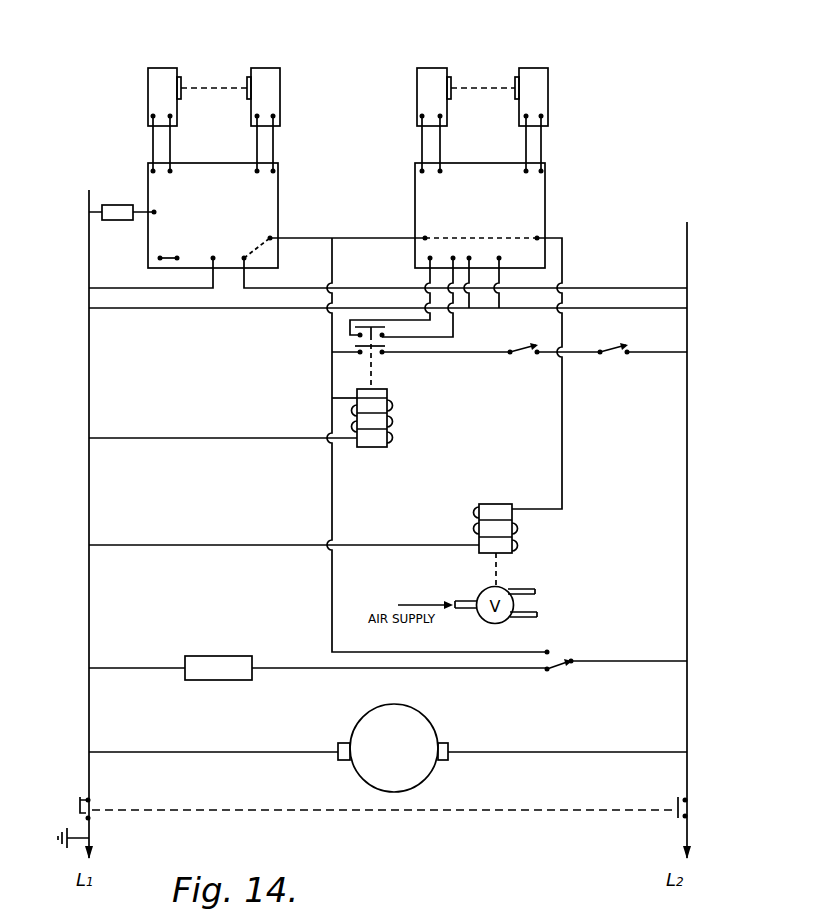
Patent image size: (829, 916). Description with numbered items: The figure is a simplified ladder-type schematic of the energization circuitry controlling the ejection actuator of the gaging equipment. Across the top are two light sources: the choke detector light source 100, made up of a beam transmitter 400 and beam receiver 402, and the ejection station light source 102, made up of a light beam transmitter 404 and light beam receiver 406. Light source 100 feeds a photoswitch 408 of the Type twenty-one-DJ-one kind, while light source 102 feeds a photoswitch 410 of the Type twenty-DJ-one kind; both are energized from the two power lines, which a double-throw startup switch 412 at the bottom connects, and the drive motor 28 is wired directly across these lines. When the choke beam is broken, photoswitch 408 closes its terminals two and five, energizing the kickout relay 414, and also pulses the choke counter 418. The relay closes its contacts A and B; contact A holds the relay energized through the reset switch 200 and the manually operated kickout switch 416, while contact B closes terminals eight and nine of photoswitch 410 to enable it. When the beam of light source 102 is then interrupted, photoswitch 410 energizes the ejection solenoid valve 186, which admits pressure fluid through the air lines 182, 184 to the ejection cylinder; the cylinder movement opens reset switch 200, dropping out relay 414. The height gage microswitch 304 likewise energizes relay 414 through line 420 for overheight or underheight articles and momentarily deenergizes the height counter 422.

The choke detector light source 100 is at (214, 90).
The ejection station light source 102 is at (482, 90).
The beam receiver 402 is at (155, 80).
The beam transmitter 400 is at (280, 80).
The light beam receiver 406 is at (420, 80).
The light beam transmitter 404 is at (548, 80).
The photoswitch 408 is at (272, 190).
The photoswitch 410 is at (547, 190).
The choke counter 418 is at (117, 221).
The line 420 is at (330, 584).
The kickout relay 414 is at (387, 442).
The reset switch 200 is at (520, 358).
The kickout switch 416 is at (612, 358).
The ejection solenoid valve 186 is at (483, 504).
The air line 182 is at (520, 589).
The air line 184 is at (527, 612).
The height counter 422 is at (211, 672).
The height gage microswitch 304 is at (561, 665).
The drive motor 28 is at (426, 724).
The startup switch 412 is at (78, 800).